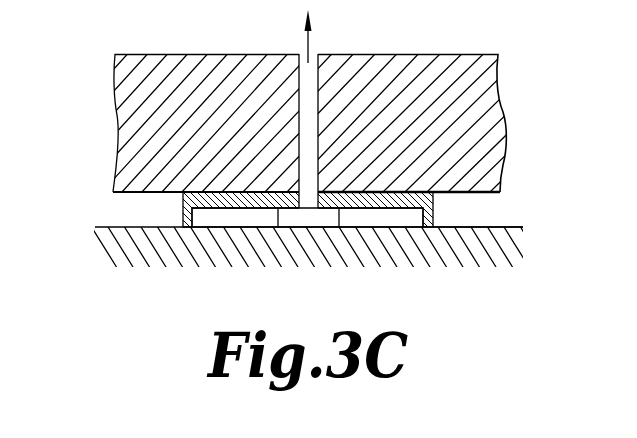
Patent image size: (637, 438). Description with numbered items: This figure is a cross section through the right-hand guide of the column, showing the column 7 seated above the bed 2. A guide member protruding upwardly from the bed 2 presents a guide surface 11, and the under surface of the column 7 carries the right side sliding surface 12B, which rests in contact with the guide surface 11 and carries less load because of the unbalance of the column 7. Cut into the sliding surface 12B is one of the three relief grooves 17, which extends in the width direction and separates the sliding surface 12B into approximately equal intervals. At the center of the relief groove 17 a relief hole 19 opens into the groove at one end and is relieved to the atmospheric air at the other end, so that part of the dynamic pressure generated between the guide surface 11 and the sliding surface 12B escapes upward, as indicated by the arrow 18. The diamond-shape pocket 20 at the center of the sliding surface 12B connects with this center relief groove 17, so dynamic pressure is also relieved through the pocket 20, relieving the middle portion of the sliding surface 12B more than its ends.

The bed 2 is at (108, 238).
The column 7 is at (116, 116).
The guide surface 11 is at (117, 227).
The right side sliding surface 12B is at (432, 229).
The relief groove 17 is at (392, 208).
The flow direction arrow 18 is at (318, 80).
The relief hole 19 is at (309, 202).
The diamond-shape pocket 20 is at (294, 220).